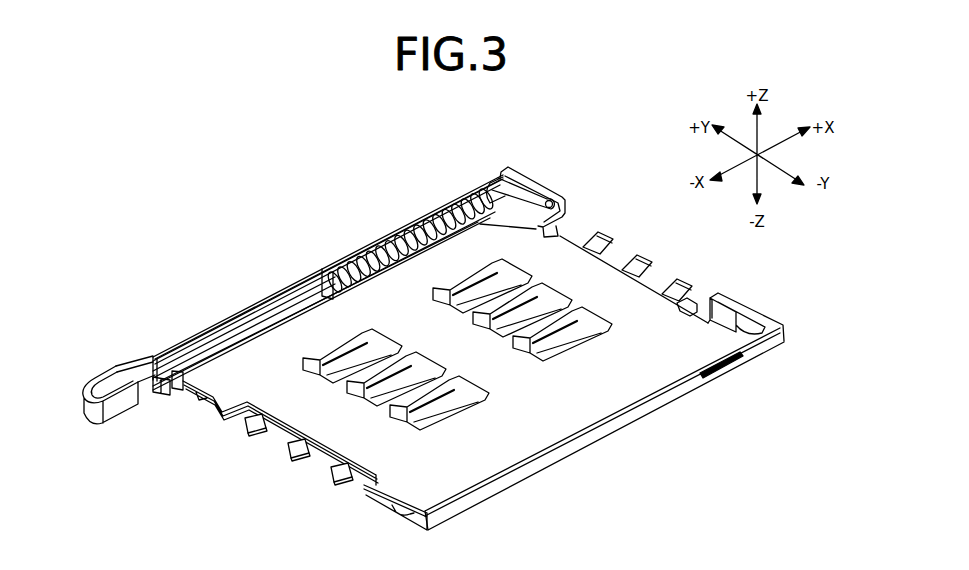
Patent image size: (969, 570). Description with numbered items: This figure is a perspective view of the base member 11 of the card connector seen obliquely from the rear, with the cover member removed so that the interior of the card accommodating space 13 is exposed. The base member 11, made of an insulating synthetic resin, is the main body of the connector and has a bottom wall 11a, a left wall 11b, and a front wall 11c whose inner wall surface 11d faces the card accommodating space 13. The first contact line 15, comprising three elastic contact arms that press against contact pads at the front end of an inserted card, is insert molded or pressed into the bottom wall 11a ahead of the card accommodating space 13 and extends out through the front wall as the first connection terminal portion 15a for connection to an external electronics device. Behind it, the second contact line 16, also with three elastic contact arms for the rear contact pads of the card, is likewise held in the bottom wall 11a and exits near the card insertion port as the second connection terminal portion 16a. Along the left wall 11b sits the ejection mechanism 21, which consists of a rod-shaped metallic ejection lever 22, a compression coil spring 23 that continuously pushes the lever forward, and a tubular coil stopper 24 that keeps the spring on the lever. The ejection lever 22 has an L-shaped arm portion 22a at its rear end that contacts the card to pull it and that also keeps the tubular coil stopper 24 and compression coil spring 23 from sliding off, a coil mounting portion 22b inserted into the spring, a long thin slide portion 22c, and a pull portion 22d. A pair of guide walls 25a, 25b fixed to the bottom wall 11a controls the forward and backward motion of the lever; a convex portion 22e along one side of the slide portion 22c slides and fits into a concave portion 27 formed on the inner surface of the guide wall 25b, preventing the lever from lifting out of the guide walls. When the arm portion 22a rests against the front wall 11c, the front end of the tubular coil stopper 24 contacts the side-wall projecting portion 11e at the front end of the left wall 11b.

The base member 11 is at (617, 430).
The bottom wall 11a is at (700, 376).
The left wall 11b is at (422, 216).
The front wall 11c is at (522, 170).
The inner wall surface 11d is at (727, 302).
The side-wall projecting portion 11e is at (503, 170).
The card accommodating space 13 is at (503, 456).
The first contact line 15 is at (556, 357).
The first connection terminal portion 15a is at (682, 290).
The second contact line 16 is at (430, 409).
The second connection terminal portion 16a is at (343, 481).
The ejection mechanism 21 is at (307, 266).
The ejection lever 22 is at (98, 426).
The arm portion 22a is at (548, 192).
The coil mounting portion 22b is at (378, 248).
The slide portion 22c is at (137, 372).
The pull portion 22d is at (112, 366).
The convex portion 22e is at (158, 396).
The compression coil spring 23 is at (455, 205).
The tubular coil stopper 24 is at (496, 186).
The guide wall 25a is at (265, 300).
The guide wall 25b is at (236, 332).
The concave portion 27 is at (184, 380).